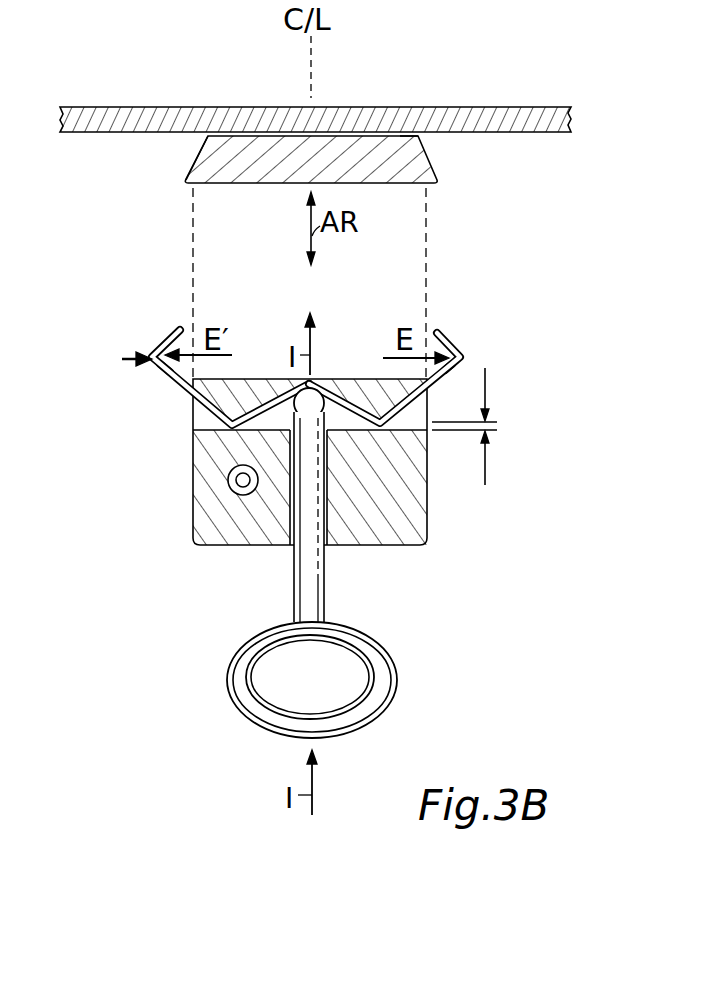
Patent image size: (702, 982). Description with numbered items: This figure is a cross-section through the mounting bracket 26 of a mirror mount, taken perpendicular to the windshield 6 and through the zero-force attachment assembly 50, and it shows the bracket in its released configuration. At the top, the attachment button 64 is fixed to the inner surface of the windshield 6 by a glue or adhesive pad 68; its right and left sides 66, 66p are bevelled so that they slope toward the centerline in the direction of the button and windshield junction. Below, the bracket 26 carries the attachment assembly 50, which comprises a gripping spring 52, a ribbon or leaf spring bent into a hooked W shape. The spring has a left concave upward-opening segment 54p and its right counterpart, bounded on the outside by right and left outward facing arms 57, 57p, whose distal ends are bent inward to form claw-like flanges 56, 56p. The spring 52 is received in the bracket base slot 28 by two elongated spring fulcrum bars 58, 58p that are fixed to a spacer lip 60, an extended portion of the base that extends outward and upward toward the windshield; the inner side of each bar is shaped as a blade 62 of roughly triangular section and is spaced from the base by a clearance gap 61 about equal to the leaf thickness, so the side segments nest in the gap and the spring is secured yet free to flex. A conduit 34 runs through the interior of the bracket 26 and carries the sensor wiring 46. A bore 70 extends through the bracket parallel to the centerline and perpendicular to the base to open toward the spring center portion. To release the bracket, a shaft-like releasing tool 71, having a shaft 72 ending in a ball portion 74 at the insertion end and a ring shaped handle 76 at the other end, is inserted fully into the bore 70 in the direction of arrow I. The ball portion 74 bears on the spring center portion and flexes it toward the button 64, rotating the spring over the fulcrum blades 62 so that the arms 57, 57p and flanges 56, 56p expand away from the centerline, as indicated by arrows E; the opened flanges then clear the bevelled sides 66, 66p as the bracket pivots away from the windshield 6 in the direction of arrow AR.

The windshield 6 is at (451, 107).
The attachment button 64 is at (323, 149).
The right bevelled side 66 is at (312, 136).
The left bevelled side 66p is at (196, 160).
The glue or adhesive pad 68 is at (418, 137).
The bracket 26 is at (298, 457).
The bracket base slot 28 is at (387, 436).
The internal conduit 34 is at (228, 467).
The KOZI sensor wiring 46 is at (236, 488).
The left concave upward-opening segment 54p is at (226, 426).
The fulcrum blade 62 is at (368, 408).
The zero-force attachment assembly 50 is at (356, 355).
The gripping spring 52 is at (119, 360).
The right claw-like flange 56 is at (414, 356).
The left claw-like flange 56p is at (210, 355).
The right outward facing arm 57 is at (454, 378).
The left outward facing arm 57p is at (171, 377).
The right spring fulcrum bar 58 is at (376, 378).
The left spring fulcrum bar 58p is at (243, 378).
The spacer lip 60 is at (432, 410).
The clearance gap 61 is at (497, 431).
The ball portion 74 is at (311, 380).
The bore 70 is at (293, 526).
The shaft 72 is at (311, 517).
The releasing tool 71 is at (348, 683).
The ring shaped handle 76 is at (353, 652).